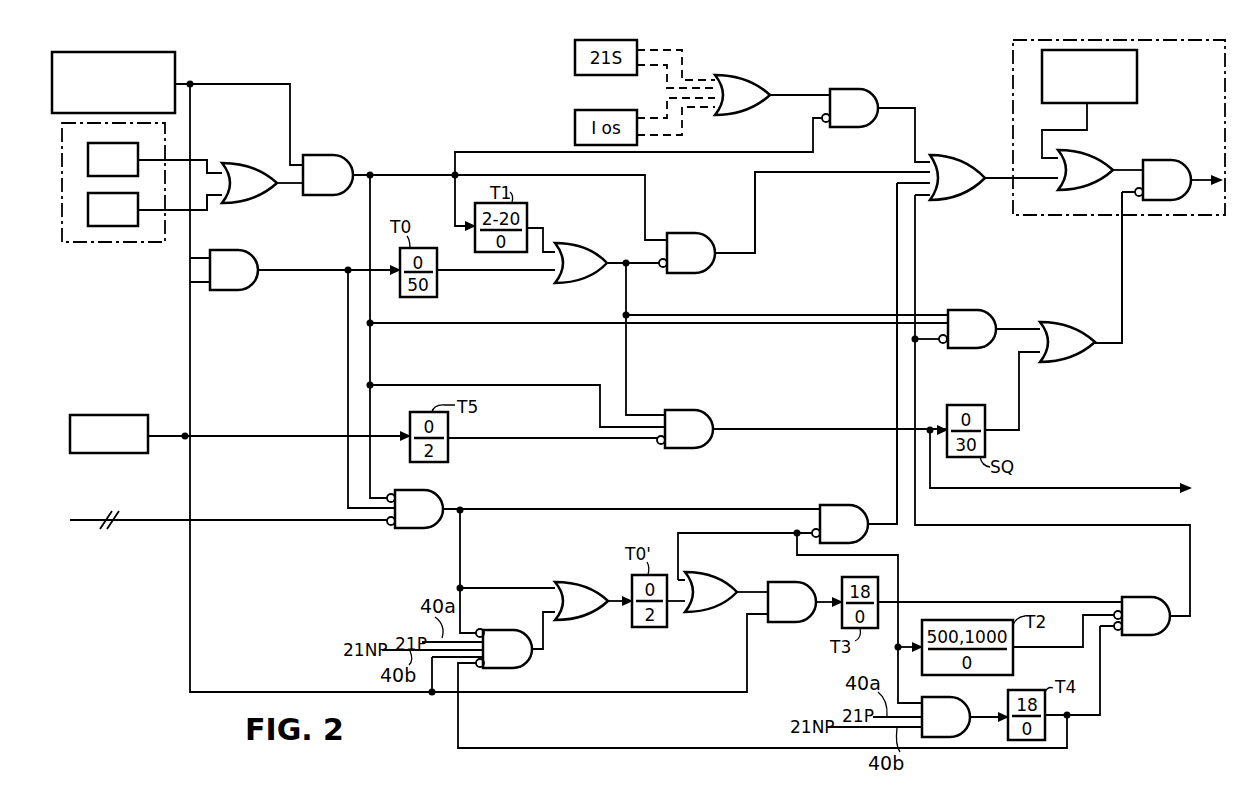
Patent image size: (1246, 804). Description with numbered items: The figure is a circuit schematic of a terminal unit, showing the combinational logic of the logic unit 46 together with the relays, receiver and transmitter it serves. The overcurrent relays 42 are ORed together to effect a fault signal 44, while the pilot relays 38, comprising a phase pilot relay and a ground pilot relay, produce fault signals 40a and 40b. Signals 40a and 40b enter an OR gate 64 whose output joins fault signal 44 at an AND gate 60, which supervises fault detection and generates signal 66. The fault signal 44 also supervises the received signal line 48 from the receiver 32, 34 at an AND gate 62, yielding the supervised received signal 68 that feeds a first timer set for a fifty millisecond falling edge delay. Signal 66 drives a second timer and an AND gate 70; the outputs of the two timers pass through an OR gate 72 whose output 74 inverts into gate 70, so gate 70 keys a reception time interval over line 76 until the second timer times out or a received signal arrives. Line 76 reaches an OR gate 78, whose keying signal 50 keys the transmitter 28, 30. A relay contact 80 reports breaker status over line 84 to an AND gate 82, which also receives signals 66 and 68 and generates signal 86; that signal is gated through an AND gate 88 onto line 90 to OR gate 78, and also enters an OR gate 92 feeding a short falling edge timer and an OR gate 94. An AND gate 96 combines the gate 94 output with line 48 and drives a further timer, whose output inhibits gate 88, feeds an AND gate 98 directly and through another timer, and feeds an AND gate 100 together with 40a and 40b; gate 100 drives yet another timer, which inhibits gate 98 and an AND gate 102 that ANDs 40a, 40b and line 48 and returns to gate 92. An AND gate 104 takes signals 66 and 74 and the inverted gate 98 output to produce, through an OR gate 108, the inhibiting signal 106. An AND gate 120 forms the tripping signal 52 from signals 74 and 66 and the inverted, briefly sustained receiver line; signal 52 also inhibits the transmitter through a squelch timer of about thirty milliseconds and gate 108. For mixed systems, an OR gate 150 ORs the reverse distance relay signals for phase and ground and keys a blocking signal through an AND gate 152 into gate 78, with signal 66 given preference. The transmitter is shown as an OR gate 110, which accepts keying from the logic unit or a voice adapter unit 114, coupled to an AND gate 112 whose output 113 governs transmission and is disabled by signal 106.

The overcurrent relays 42 is at (160, 52).
The fault signal 44 is at (193, 80).
The pilot relays 38 is at (112, 242).
The fault signal from phase pilot relay 40a is at (203, 160).
The fault signal from ground pilot relay 40b is at (205, 210).
The OR gate 64 is at (245, 165).
The AND gate 60 is at (322, 155).
The supervised fault detection signal 66 is at (372, 172).
The AND gate 62 is at (242, 251).
The supervised received signal line 68 is at (348, 268).
The OR gate 72 is at (586, 239).
The OR gate output 74 is at (627, 262).
The AND gate 70 is at (678, 233).
The keying signal line 76 is at (755, 205).
The OR gate 150 is at (735, 77).
The AND gate 152 is at (843, 89).
The OR gate 78 is at (957, 143).
The keying signal 50 is at (1003, 176).
The transmitter 28 is at (1119, 127).
The transmitter 30 is at (1119, 127).
The voice adapter unit 114 is at (1137, 85).
The OR gate 110 is at (1085, 150).
The AND gate 112 is at (1160, 160).
The output of AND gate 112 113 is at (1205, 178).
The inhibiting signal 106 is at (1122, 248).
The AND gate 104 is at (962, 310).
The OR gate 108 is at (1064, 322).
The tripping signal 52 is at (1143, 488).
The output line of AND gate 88 90 is at (896, 448).
The AND gate 120 is at (695, 410).
The logic unit 46 is at (695, 483).
The receiver 32 is at (109, 450).
The receiver 34 is at (73, 453).
The received signal line 48 is at (186, 438).
The AND gate 82 is at (418, 490).
The signal line 86 is at (472, 509).
The signal line 84 is at (222, 521).
The relay contact 80 is at (108, 526).
The AND gate 88 is at (845, 505).
The OR gate 92 is at (584, 570).
The OR gate 94 is at (700, 572).
The AND gate 96 is at (794, 622).
The AND gate 98 is at (1143, 635).
The AND gate 100 is at (960, 697).
The AND gate 102 is at (528, 665).